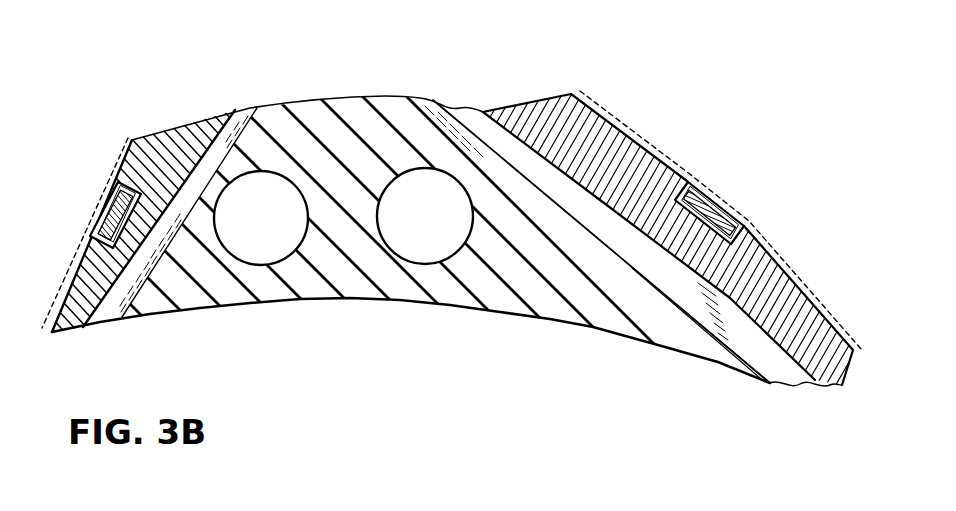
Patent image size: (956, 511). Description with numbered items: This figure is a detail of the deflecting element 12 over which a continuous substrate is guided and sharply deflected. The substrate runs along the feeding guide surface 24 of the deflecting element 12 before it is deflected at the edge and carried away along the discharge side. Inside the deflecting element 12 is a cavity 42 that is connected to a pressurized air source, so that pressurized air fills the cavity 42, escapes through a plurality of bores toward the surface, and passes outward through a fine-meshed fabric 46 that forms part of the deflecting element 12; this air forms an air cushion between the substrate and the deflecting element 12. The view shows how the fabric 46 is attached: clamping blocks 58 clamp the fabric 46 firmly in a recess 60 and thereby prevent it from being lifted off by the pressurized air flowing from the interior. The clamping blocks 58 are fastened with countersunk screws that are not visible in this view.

The deflecting element 12 is at (446, 306).
The feeding guide surface 24 is at (133, 142).
The cavity 42 is at (620, 165).
The fine-meshed fabric 46 is at (67, 272).
The clamping blocks 58 is at (96, 226).
The recess 60 is at (118, 187).